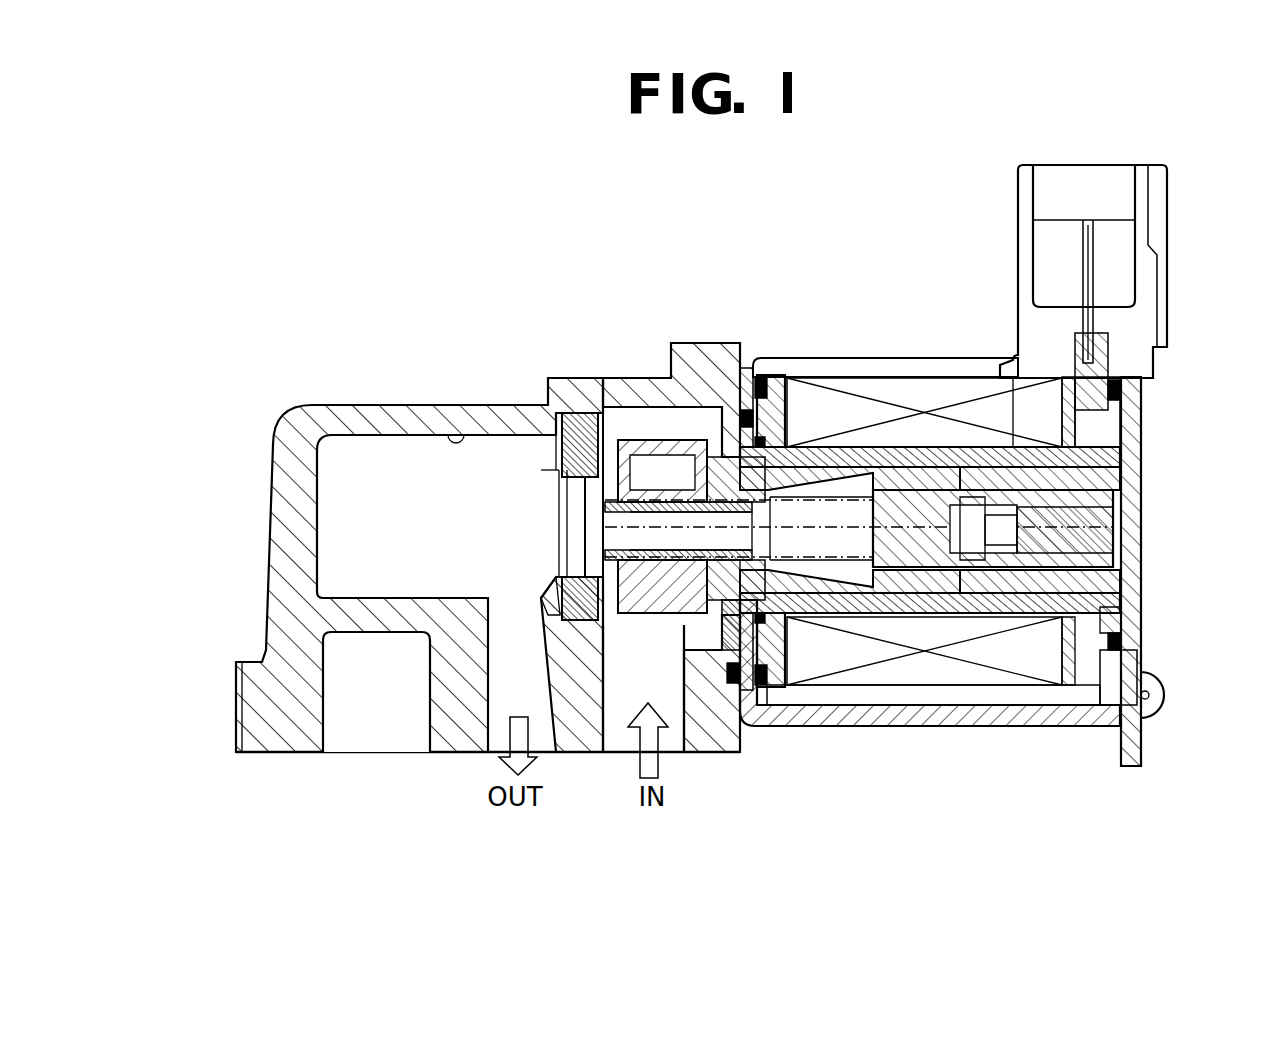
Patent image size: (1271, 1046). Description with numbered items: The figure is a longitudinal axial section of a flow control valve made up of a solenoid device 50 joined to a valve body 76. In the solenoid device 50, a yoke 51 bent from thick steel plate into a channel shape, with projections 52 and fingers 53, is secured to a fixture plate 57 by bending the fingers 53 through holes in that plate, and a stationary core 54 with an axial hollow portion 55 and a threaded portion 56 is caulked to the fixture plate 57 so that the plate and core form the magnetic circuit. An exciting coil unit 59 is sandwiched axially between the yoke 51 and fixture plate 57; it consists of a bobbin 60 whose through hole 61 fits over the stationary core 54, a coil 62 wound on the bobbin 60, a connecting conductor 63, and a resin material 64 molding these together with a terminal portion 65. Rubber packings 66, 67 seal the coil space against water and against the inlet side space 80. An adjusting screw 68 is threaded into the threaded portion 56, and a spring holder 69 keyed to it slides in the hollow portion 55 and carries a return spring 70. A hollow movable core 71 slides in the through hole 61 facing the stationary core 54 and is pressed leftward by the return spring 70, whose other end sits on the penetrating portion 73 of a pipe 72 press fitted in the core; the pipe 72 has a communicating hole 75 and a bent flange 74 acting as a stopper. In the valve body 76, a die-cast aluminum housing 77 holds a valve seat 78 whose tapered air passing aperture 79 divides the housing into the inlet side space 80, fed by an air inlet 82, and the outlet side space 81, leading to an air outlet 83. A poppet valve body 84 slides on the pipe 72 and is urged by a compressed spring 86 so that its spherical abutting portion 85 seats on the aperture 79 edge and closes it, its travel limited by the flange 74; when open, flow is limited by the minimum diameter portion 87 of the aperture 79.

The solenoid device 50 is at (1080, 729).
The yoke 51 is at (850, 712).
The projections 52 is at (732, 705).
The fingers 53 is at (1163, 712).
The stationary core 54 is at (1135, 485).
The hollow portion 55 is at (880, 505).
The threaded portion 56 is at (1135, 560).
The fixture plate 57 is at (1134, 617).
The exciting coil unit 59 is at (866, 352).
The bobbin 60 is at (1135, 445).
The through hole 61 is at (967, 520).
The coil 62 is at (950, 697).
The connecting conductor 63 is at (1093, 240).
The resin material 64 is at (825, 363).
The terminal portion 65 is at (1158, 188).
The packing 66 is at (761, 380).
The packing 67 is at (1140, 390).
The adjusting screw 68 is at (1120, 527).
The spring holder 69 is at (992, 438).
The return spring 70 is at (900, 645).
The movable core 71 is at (822, 650).
The pipe 72 is at (682, 495).
The penetrating portion 73 is at (772, 688).
The flange 74 is at (578, 412).
The communicating hole 75 is at (712, 445).
The valve body 76 is at (382, 403).
The housing 77 is at (290, 403).
The valve seat 78 is at (552, 470).
The air passing aperture 79 is at (574, 517).
The inlet side space 80 is at (650, 378).
The outlet side space 81 is at (456, 434).
The air inlet 82 is at (627, 618).
The air outlet 83 is at (482, 745).
The poppet valve body 84 is at (610, 470).
The abutting portion 85 is at (566, 640).
The spring 86 is at (684, 655).
The minimum diameter portion 87 is at (548, 565).